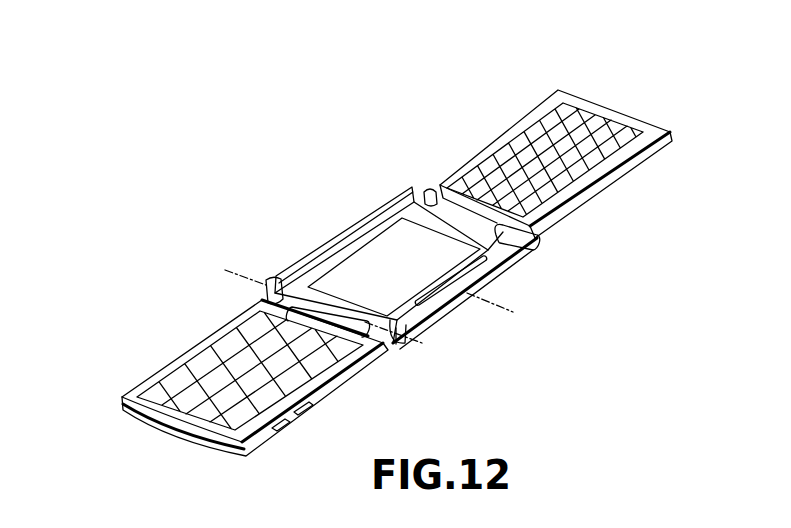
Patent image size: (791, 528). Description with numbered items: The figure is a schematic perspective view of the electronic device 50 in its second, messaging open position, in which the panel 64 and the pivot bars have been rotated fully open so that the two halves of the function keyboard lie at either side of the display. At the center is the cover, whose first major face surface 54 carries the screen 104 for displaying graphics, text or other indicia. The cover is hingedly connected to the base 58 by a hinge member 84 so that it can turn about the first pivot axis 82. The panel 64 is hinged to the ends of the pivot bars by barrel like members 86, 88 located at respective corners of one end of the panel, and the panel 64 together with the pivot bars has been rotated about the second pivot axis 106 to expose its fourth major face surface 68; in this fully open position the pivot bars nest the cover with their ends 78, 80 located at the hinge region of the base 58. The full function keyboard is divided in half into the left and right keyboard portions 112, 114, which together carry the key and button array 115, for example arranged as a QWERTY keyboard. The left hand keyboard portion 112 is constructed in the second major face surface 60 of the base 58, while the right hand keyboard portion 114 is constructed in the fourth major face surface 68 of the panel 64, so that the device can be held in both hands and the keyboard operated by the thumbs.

The electronic device 50 is at (545, 50).
The first major face surface 54 is at (395, 235).
The base 58 is at (186, 436).
The second major face surface 60 is at (122, 397).
The panel 64 is at (582, 87).
The fourth major face surface 68 is at (502, 140).
The end of pivot bar 78 is at (270, 275).
The end of pivot bar 80 is at (392, 347).
The first pivot axis 82 is at (417, 347).
The hinge member 84 is at (275, 312).
The barrel like member 86 is at (523, 227).
The barrel like member 88 is at (413, 190).
The screen 104 is at (410, 250).
The second pivot axis 106 is at (500, 303).
The left keyboard portion 112 is at (155, 358).
The right keyboard portion 114 is at (472, 148).
The key and button array 115 is at (310, 202).